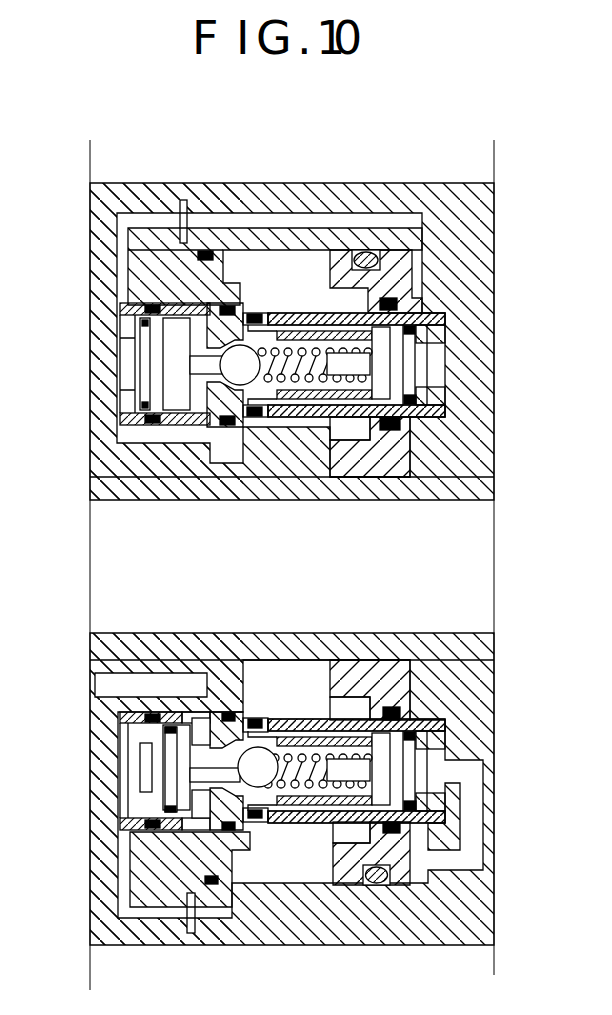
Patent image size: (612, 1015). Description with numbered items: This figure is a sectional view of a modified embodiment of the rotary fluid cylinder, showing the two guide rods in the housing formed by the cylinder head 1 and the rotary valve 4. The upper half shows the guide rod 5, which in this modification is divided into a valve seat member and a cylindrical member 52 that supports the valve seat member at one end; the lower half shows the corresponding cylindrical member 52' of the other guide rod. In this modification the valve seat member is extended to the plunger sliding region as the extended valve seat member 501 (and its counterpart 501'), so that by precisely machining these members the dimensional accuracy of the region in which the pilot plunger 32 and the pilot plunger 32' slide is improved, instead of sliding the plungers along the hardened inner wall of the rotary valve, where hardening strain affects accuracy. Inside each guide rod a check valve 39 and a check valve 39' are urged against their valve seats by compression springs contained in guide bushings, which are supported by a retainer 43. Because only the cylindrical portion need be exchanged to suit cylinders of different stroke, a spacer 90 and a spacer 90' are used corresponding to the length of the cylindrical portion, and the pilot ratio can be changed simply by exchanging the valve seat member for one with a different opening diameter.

The cylinder head 1 is at (445, 196).
The rotary valve 4 is at (133, 196).
The guide rod 5 is at (378, 130).
The extended valve seat member 501 is at (269, 277).
The cylindrical member 52 is at (356, 302).
The pilot plunger 32 is at (129, 364).
The check valve 39 is at (253, 445).
The retainer 43 is at (430, 374).
The spacer 90 is at (477, 360).
The extended valve seat member 501' is at (278, 713).
The cylindrical member 52' is at (356, 740).
The pilot plunger 32' is at (137, 771).
The check valve 39' is at (274, 865).
The spacer 90' is at (480, 771).